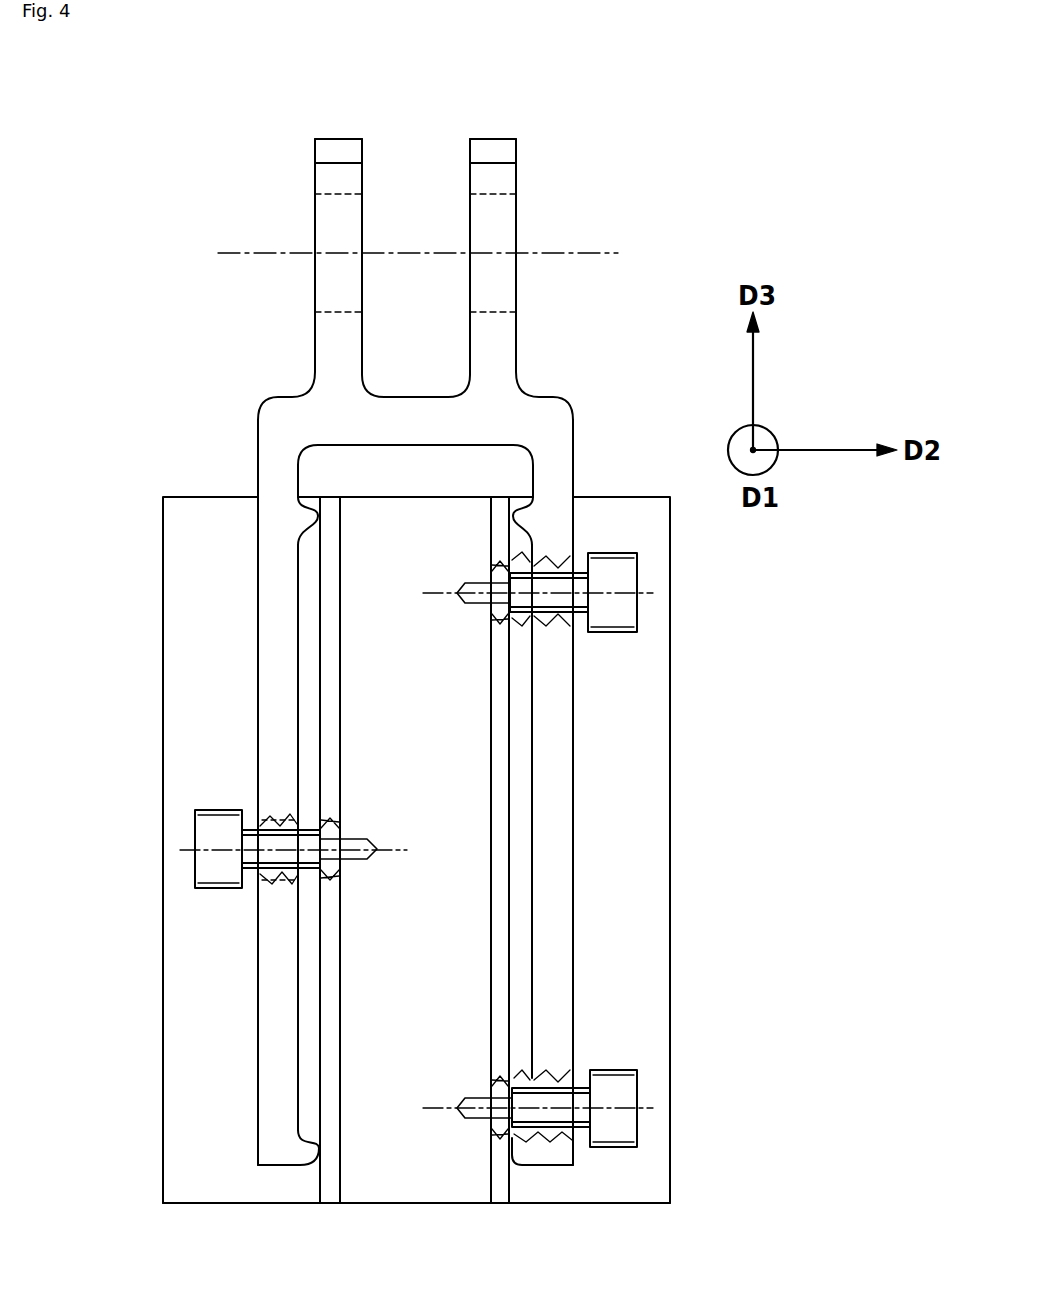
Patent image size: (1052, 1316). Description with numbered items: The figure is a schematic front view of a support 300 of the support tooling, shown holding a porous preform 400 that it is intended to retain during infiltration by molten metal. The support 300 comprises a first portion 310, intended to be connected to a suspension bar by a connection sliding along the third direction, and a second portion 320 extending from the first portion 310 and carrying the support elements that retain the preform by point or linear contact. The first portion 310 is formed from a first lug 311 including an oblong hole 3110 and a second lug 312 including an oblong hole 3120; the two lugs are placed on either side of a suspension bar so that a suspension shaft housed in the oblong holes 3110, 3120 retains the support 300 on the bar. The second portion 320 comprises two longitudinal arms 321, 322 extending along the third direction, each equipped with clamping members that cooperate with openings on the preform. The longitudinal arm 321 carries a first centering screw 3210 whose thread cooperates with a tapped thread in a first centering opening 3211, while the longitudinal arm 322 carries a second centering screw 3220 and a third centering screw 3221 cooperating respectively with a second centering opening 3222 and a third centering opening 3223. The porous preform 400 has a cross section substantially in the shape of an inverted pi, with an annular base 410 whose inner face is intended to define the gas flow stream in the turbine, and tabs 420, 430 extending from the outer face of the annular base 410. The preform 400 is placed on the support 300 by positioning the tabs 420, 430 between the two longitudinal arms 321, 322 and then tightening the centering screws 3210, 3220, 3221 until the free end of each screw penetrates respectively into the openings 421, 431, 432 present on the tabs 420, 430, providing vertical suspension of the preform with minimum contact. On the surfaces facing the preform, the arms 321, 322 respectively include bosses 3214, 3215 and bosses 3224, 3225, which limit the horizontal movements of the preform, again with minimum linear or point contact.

The support 300 is at (414, 663).
The first portion 310 is at (431, 243).
The first lug 311 is at (345, 139).
The second lug 312 is at (495, 139).
The oblong hole 3110 is at (340, 195).
The oblong hole 3120 is at (492, 195).
The second portion 320 is at (460, 840).
The longitudinal arm 321 is at (296, 840).
The longitudinal arm 322 is at (582, 840).
The first centering screw 3210 is at (210, 865).
The first centering opening 3211 is at (278, 812).
The boss 3214 is at (306, 514).
The boss 3215 is at (312, 1155).
The second centering screw 3220 is at (622, 575).
The third centering screw 3221 is at (622, 1128).
The second centering opening 3222 is at (540, 560).
The third centering opening 3223 is at (553, 1074).
The boss 3224 is at (494, 517).
The boss 3225 is at (520, 1153).
The porous preform 400 is at (355, 879).
The annular base 410 is at (205, 1205).
The tab 420 is at (360, 879).
The opening 421 is at (336, 829).
The tab 430 is at (469, 879).
The opening 431 is at (497, 620).
The opening 432 is at (493, 1082).